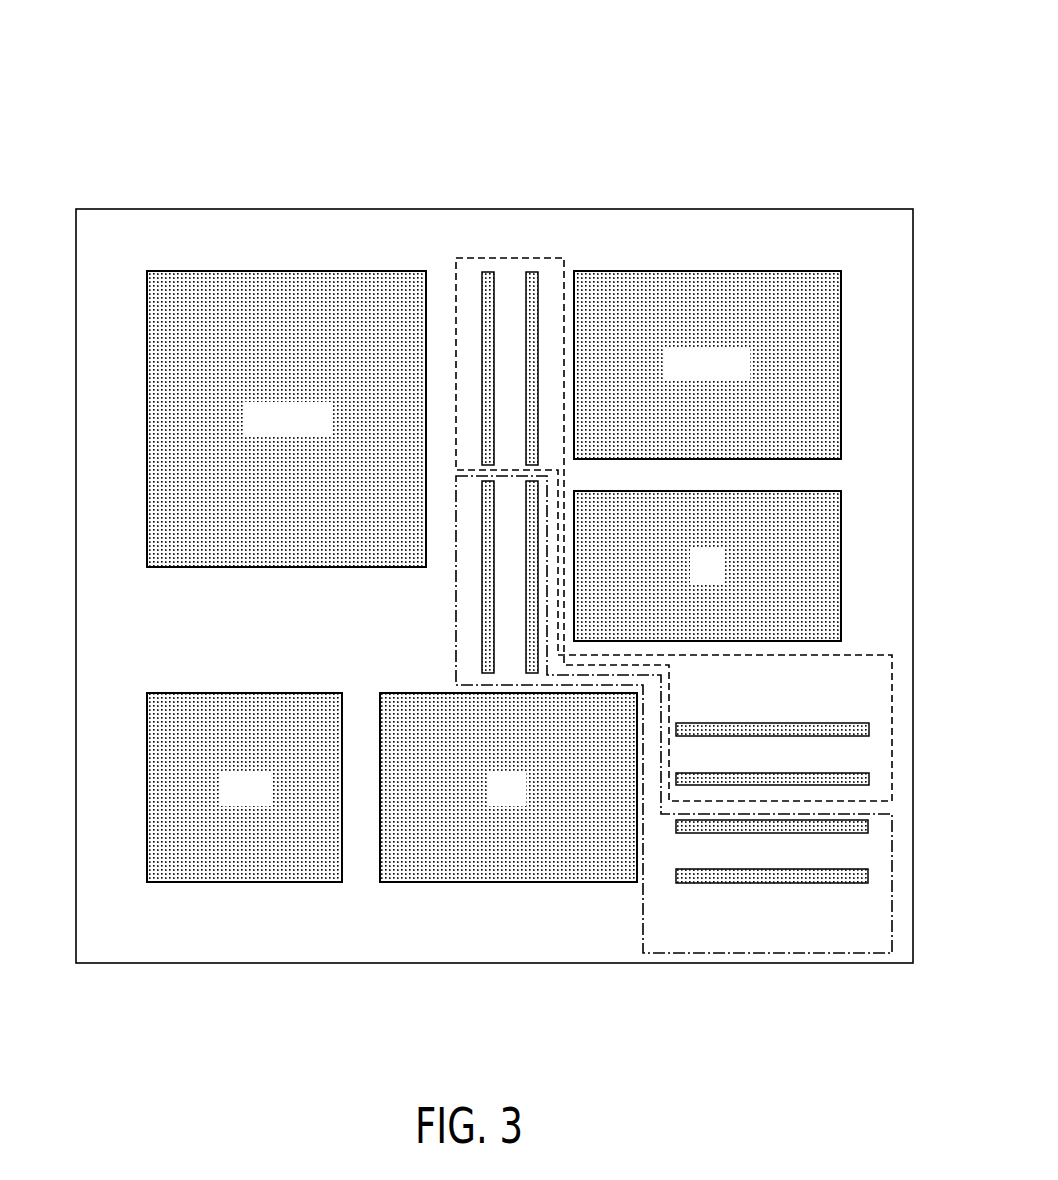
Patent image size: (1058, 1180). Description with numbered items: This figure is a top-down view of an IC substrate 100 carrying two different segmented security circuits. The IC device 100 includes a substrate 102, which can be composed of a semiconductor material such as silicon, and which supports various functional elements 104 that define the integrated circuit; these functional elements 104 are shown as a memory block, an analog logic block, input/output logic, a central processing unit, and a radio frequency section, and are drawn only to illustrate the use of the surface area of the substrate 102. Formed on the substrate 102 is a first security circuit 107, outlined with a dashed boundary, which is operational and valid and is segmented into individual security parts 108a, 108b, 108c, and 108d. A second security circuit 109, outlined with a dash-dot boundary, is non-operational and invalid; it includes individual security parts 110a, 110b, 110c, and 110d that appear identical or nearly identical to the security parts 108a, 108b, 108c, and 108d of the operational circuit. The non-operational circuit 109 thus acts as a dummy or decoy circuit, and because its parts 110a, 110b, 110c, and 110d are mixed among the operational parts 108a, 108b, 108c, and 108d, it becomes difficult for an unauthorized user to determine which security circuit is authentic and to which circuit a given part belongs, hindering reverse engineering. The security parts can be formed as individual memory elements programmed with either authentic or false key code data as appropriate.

The IC device 100 is at (100, 80).
The substrate 102 is at (110, 242).
The functional elements 104 is at (265, 270).
The first security circuit 107 is at (467, 244).
The security part 108a is at (488, 272).
The security part 108b is at (532, 272).
The security part 108c is at (772, 722).
The security part 108d is at (760, 772).
The second security circuit 109 is at (626, 904).
The security part 110a is at (526, 585).
The security part 110b is at (482, 636).
The security part 110c is at (773, 883).
The security part 110d is at (855, 833).